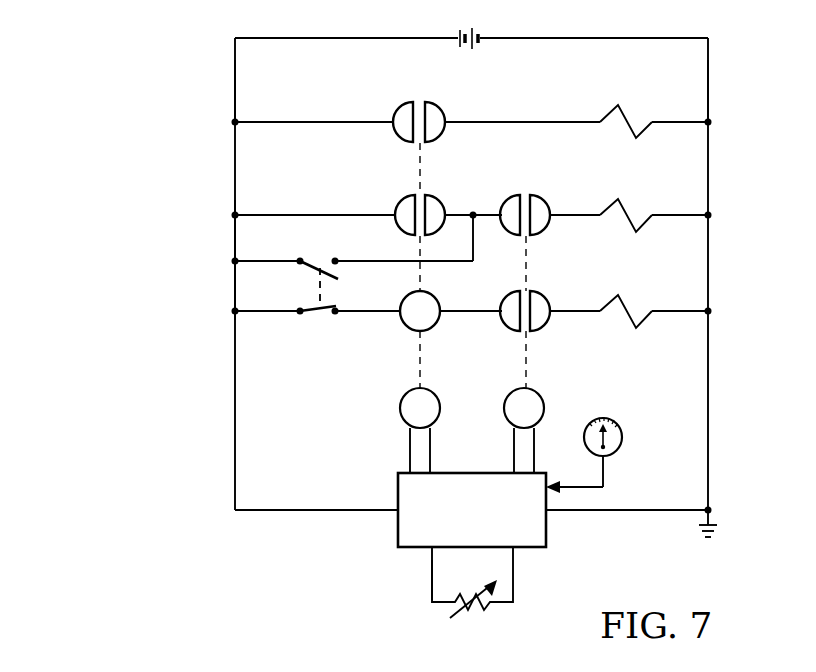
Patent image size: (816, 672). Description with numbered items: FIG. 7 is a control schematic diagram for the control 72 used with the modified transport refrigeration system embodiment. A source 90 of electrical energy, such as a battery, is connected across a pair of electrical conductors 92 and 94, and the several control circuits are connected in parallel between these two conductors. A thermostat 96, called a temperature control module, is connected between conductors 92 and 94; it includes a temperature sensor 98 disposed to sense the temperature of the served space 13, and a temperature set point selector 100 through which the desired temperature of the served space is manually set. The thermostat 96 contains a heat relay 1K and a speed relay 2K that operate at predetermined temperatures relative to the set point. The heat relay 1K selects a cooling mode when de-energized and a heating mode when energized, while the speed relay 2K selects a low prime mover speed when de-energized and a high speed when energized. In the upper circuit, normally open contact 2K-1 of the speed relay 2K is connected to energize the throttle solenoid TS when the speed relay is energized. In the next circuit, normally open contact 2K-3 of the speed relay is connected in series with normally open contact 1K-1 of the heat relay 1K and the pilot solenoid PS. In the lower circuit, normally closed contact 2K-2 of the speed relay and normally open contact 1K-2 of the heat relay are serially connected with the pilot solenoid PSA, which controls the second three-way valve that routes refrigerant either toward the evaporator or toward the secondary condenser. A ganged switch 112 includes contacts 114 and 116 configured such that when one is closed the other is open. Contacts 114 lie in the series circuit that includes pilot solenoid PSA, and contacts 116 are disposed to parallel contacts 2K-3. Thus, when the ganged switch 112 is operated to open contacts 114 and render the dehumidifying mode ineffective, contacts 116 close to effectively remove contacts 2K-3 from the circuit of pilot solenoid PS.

The source of electrical energy 90 is at (471, 28).
The electrical conductor 92 is at (235, 90).
The electrical conductor 94 is at (708, 80).
The control 72 is at (181, 288).
The ganged switch 112 is at (388, 299).
The contacts 114 is at (322, 318).
The contacts 116 is at (321, 256).
The thermostat 96 is at (546, 531).
The temperature sensor 98 is at (479, 612).
The temperature set point selector 100 is at (622, 443).
The served space 13 is at (388, 611).
The normally open contact 2K-1 is at (400, 104).
The normally closed contact 2K-2 is at (438, 300).
The normally open contact 2K-3 is at (442, 203).
The normally open contact 1K-1 is at (546, 203).
The normally open contact 1K-2 is at (546, 300).
The speed relay 2K is at (420, 430).
The heat relay 1K is at (524, 430).
The throttle solenoid TS is at (624, 120).
The pilot solenoid PS is at (626, 213).
The pilot solenoid PSA is at (628, 309).